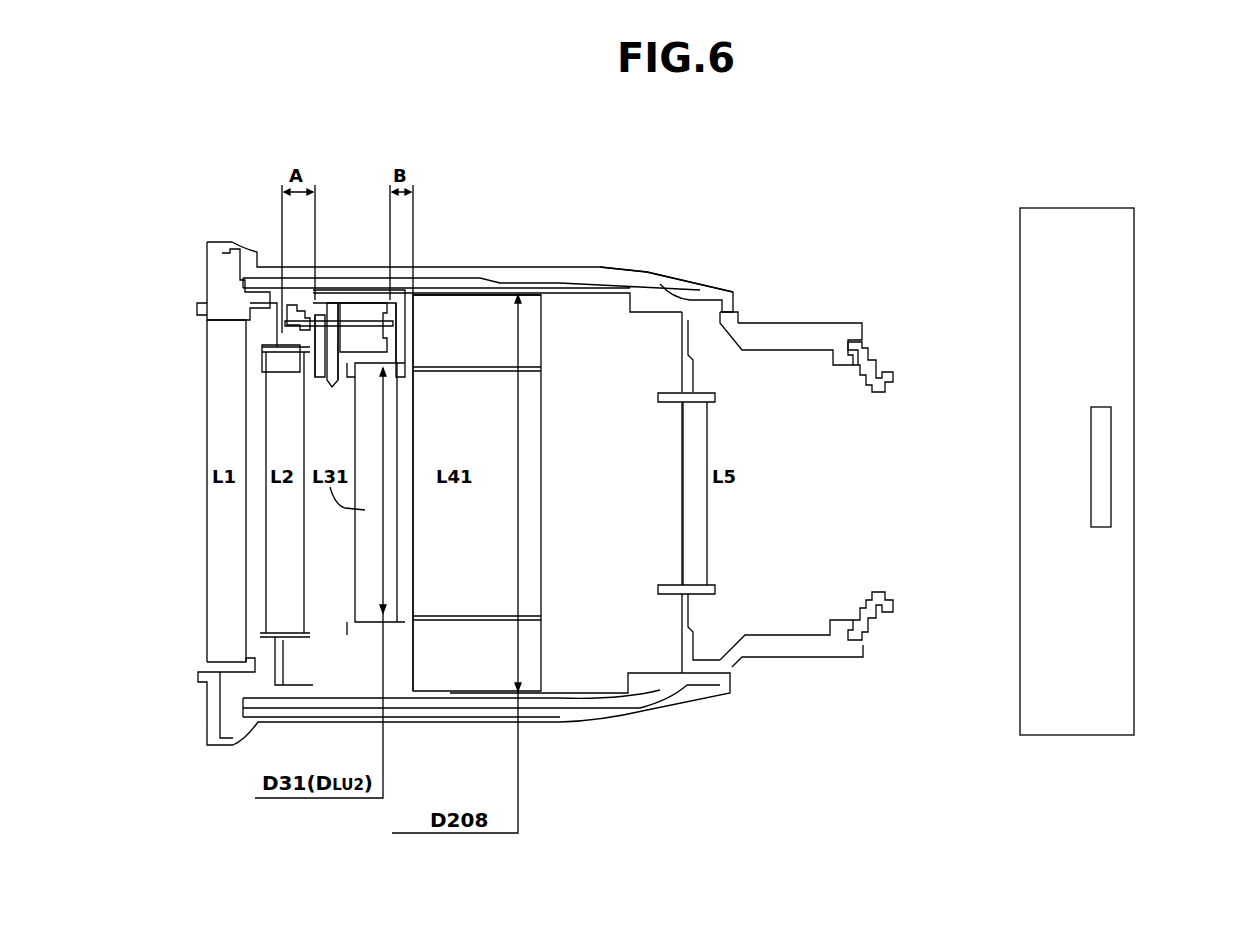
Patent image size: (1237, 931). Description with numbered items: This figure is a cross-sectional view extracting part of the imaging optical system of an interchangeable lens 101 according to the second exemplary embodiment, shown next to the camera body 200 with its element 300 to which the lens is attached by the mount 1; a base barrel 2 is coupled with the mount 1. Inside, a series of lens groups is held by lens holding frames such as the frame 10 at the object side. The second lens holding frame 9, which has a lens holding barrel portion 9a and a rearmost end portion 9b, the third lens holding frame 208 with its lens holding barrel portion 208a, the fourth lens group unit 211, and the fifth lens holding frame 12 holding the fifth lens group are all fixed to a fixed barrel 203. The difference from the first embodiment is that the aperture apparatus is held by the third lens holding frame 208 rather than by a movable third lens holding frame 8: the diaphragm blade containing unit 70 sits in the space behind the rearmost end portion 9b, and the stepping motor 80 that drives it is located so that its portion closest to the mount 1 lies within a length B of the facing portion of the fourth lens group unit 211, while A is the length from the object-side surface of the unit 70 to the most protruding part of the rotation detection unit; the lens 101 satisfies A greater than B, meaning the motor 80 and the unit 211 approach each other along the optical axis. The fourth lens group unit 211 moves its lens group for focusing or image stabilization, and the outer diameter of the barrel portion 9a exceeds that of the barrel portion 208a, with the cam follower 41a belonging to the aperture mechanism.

The interchangeable lens 101 is at (689, 140).
The lens holding frame 10 is at (207, 266).
The cam follower 41a is at (290, 345).
The second lens holding frame 9 is at (295, 348).
The lens holding barrel portion 9a is at (307, 358).
The rearmost end portion 9b is at (312, 372).
The diaphragm blade containing unit 70 is at (347, 392).
The stepping motor 80 is at (368, 310).
The third lens holding frame 8 is at (415, 343).
The third lens holding frame 208 is at (407, 303).
The lens holding barrel portion 208a is at (400, 340).
The fourth lens group unit 211 is at (493, 312).
The fixed barrel 203 is at (663, 300).
The base barrel 2 is at (820, 337).
The mount 1 is at (883, 367).
The fifth lens holding frame 12 is at (688, 393).
The camera body 200 is at (1081, 219).
The image sensor element 300 is at (1106, 466).